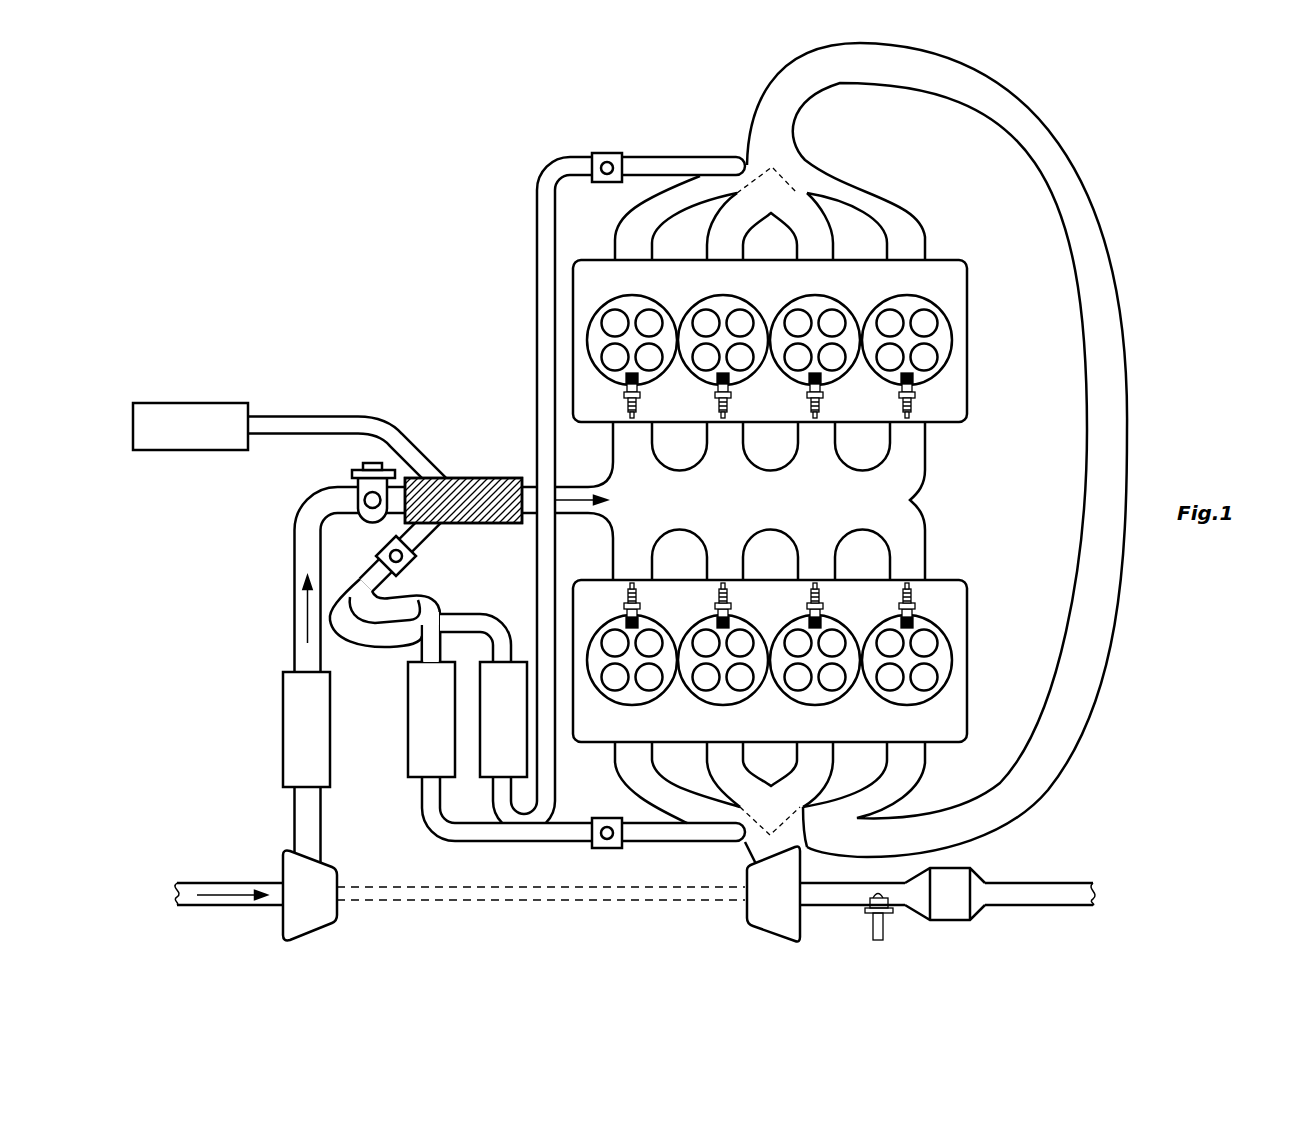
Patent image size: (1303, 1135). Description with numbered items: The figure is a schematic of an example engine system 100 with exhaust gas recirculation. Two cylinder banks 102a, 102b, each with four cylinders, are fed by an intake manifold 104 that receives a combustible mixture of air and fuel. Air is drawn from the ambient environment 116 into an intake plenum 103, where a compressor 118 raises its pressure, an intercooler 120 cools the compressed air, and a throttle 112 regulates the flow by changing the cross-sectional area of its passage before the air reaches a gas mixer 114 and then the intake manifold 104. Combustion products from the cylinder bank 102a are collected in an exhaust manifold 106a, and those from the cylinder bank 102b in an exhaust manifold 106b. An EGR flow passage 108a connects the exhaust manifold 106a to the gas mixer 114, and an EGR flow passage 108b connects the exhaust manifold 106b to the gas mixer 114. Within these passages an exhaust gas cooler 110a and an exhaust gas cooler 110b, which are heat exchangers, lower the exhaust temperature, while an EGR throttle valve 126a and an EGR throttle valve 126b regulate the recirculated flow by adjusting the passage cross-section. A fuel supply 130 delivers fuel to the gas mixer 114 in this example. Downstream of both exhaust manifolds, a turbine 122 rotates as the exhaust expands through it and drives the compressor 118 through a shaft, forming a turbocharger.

The engine system 100 is at (378, 312).
The cylinder bank 102a is at (967, 336).
The cylinder bank 102b is at (967, 658).
The intake plenum 103 is at (300, 822).
The intake manifold 104 is at (935, 500).
The exhaust manifold 106a is at (925, 215).
The exhaust manifold 106b is at (925, 786).
The EGR flow passage 108a is at (537, 268).
The EGR flow passage 108b is at (422, 805).
The exhaust gas cooler 110a is at (487, 705).
The exhaust gas cooler 110b is at (425, 740).
The throttle 112 is at (362, 466).
The gas mixer 114 is at (467, 478).
The ambient environment 116 is at (166, 909).
The compressor 118 is at (315, 930).
The intercooler 120 is at (288, 730).
The turbine 122 is at (770, 925).
The EGR throttle valve 126a is at (607, 153).
The EGR throttle valve 126b is at (615, 848).
The fuel supply 130 is at (190, 405).